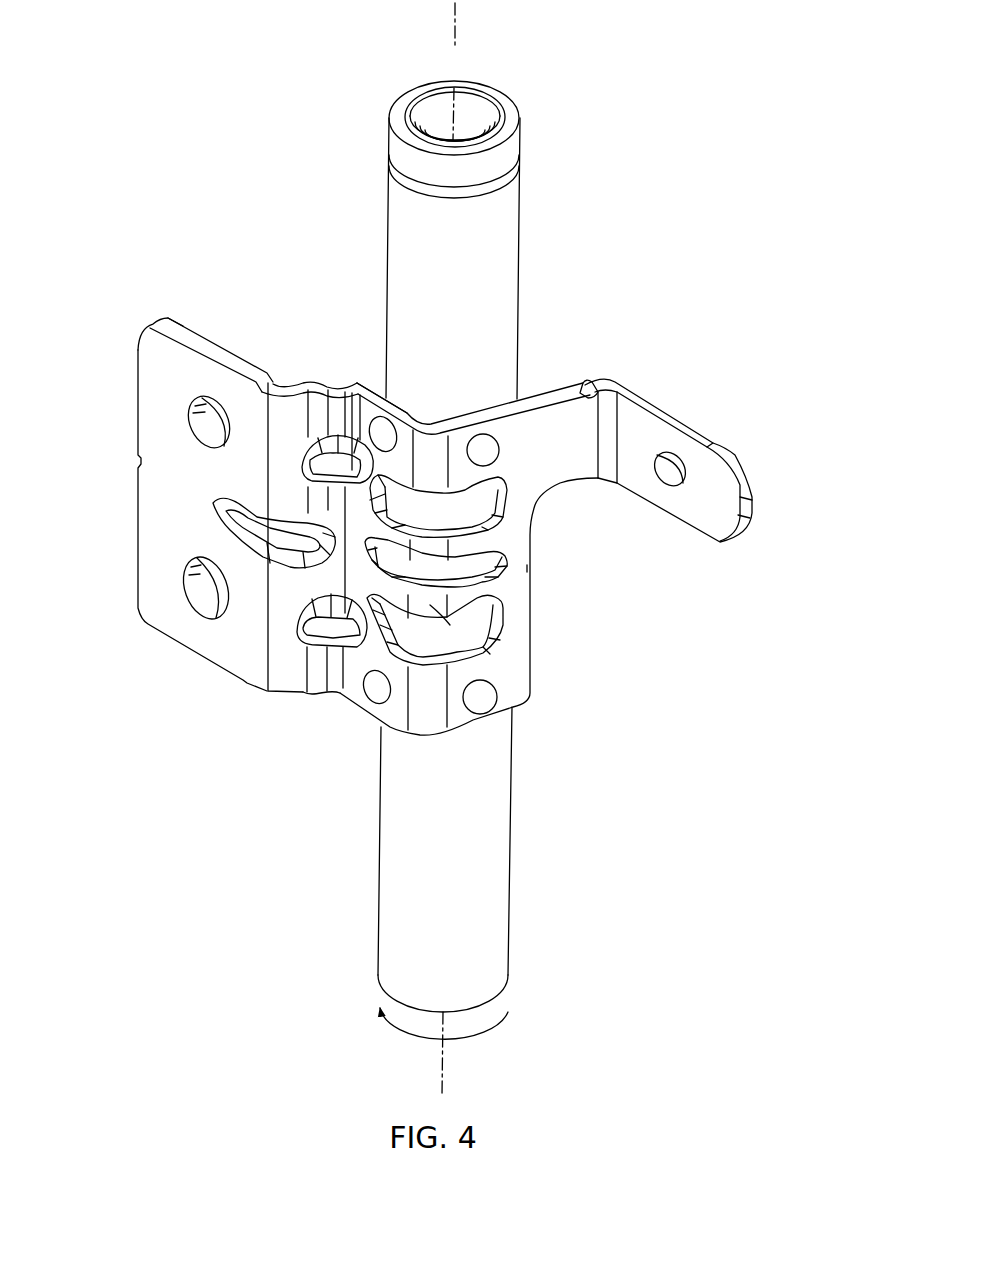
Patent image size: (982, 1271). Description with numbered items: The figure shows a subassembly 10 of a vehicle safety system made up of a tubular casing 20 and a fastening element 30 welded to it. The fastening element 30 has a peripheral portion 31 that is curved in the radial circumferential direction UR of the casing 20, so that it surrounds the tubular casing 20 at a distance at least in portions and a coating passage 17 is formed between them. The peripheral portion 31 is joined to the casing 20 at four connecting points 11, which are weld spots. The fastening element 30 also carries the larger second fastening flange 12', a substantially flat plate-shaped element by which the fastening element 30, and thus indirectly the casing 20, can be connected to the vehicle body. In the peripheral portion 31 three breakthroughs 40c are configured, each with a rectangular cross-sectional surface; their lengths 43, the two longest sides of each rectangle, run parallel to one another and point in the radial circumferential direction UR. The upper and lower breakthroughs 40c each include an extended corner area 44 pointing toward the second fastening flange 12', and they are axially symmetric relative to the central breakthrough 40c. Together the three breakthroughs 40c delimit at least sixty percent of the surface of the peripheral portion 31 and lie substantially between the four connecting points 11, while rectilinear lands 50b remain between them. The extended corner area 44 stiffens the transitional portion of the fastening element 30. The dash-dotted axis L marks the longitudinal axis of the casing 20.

The subassembly 10 is at (268, 115).
The tubular casing 20 is at (523, 250).
The second fastening flange 12' is at (196, 505).
The fastening element 30 is at (643, 420).
The peripheral portion 31 is at (441, 426).
The coating passage 17 is at (416, 408).
The connecting points 11 is at (380, 428).
The lengths 43 is at (503, 481).
The breakthroughs 40c is at (488, 503).
The extended corner area 44 is at (385, 510).
The rectilinear lands 50b is at (423, 553).
The longitudinal axis L is at (457, 40).
The radial circumferential direction UR is at (506, 1019).